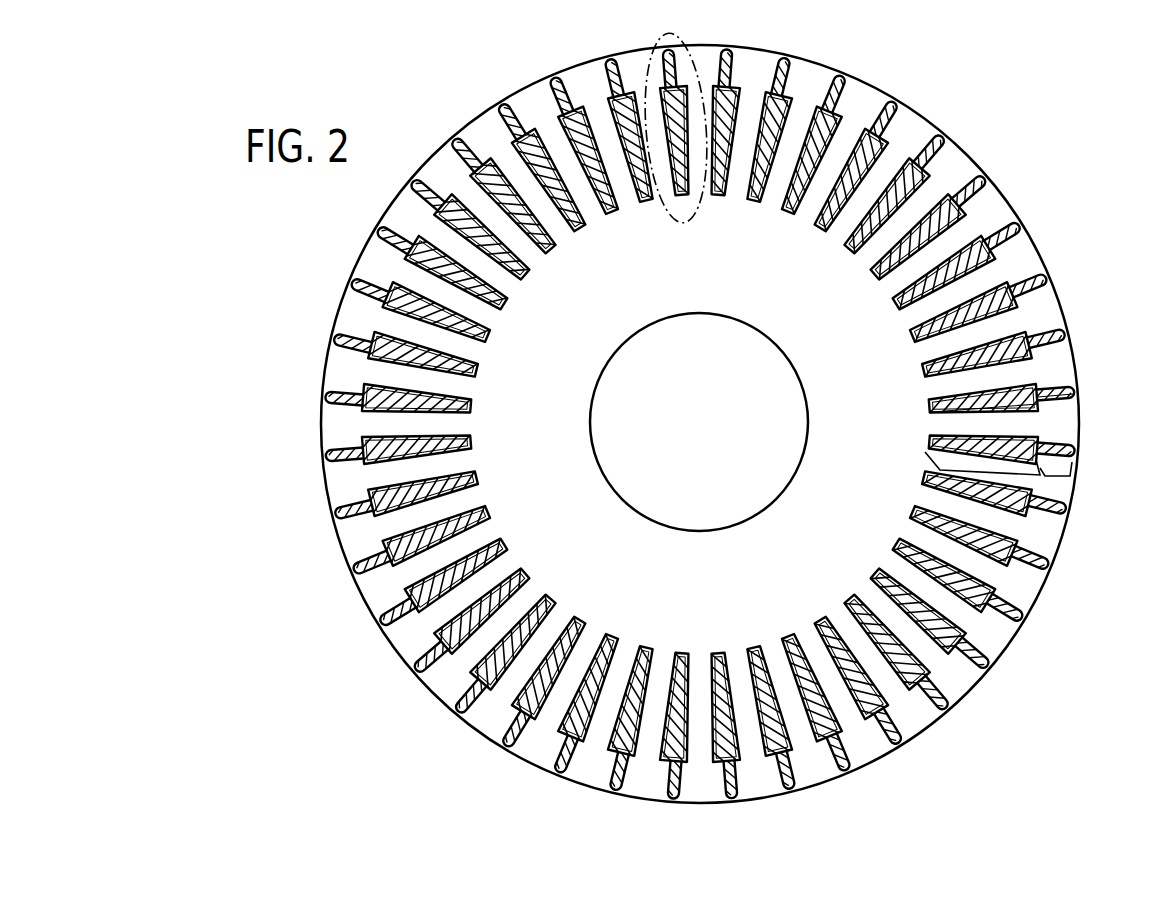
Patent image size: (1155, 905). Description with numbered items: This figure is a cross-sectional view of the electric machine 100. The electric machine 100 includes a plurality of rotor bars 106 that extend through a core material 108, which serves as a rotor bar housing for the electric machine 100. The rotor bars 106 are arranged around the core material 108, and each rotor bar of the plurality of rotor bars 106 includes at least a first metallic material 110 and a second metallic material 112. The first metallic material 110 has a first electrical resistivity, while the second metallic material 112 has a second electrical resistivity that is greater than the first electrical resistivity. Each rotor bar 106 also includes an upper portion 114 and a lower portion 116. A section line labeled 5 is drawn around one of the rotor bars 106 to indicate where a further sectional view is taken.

The electric machine 100 is at (1018, 104).
The rotor bars 106 is at (1054, 381).
The core material 108 is at (691, 291).
The first metallic material 110 is at (938, 407).
The second metallic material 112 is at (1046, 401).
The upper portion 114 is at (1064, 470).
The lower portion 116 is at (937, 470).
The section line 5- 5 is at (661, 25).